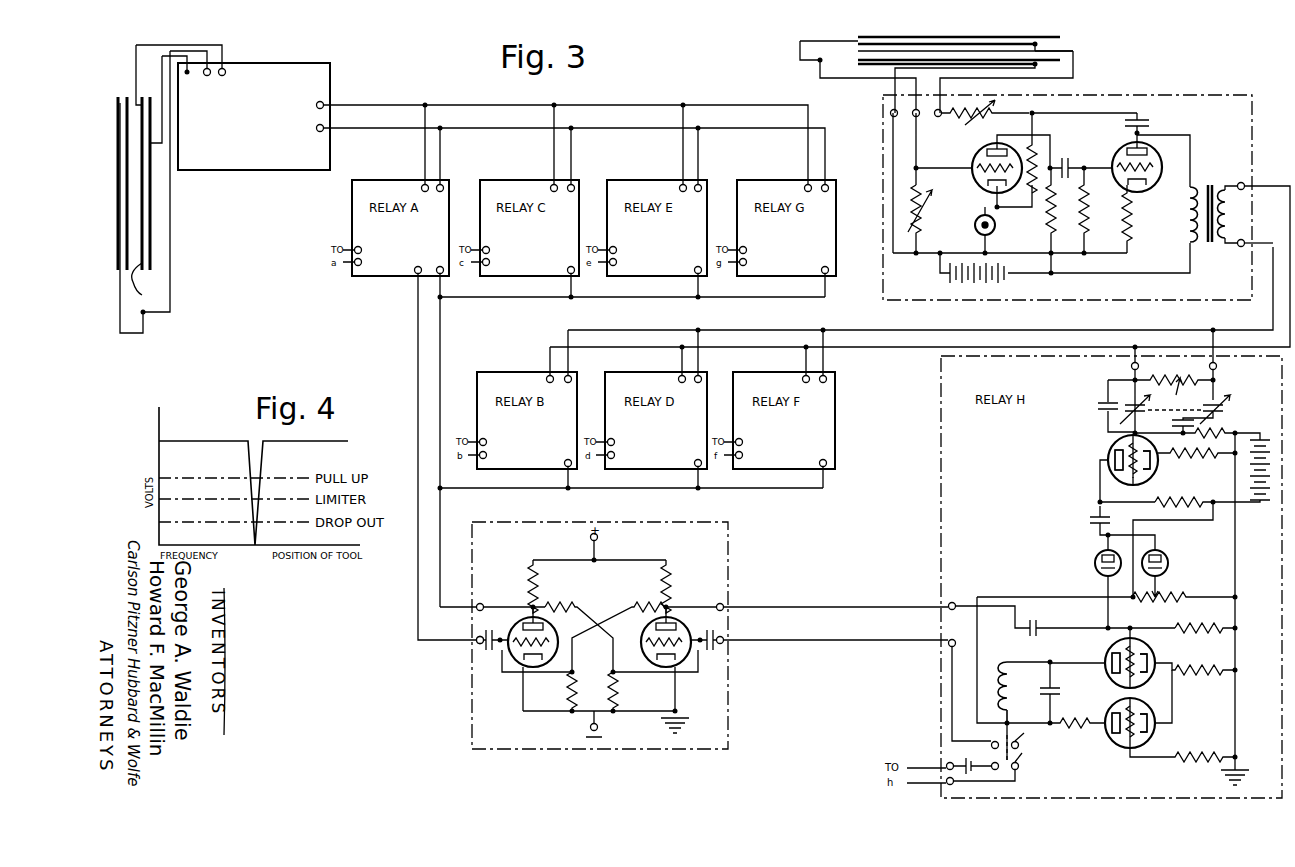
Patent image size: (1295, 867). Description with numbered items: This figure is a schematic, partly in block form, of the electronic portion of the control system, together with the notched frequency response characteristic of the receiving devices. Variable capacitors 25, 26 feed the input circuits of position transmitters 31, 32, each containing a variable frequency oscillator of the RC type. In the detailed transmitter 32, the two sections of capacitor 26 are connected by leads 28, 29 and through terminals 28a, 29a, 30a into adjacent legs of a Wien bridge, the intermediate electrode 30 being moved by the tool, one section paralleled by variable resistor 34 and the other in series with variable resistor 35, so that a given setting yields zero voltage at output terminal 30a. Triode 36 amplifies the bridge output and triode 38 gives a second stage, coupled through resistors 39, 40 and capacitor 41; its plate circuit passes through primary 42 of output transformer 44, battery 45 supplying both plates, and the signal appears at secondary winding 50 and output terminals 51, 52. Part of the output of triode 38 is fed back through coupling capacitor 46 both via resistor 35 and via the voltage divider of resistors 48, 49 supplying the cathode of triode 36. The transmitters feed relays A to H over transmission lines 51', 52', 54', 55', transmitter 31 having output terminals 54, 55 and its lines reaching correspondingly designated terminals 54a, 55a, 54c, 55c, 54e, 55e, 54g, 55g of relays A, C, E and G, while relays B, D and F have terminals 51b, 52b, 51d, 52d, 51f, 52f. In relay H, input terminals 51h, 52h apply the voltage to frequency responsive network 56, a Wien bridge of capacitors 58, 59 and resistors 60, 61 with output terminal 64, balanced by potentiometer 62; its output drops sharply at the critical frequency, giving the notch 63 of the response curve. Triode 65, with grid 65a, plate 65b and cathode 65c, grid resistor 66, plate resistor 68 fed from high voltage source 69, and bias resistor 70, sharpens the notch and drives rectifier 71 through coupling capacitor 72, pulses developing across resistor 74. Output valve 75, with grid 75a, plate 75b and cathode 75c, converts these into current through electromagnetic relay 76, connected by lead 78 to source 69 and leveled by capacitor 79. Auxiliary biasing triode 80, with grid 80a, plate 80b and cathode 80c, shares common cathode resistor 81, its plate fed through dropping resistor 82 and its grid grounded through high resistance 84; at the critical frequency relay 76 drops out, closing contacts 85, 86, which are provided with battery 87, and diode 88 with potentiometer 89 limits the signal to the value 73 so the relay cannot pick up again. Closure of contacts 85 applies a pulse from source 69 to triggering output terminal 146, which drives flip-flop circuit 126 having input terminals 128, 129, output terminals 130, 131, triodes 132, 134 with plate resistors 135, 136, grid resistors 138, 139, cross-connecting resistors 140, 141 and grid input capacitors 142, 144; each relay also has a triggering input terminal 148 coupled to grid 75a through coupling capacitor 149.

In FIG. 3, the variable capacitor 25 is at (178, 262).
In FIG. 3, the variable capacitor 26 is at (1097, 49).
In FIG. 3, the pickup coil 28 is at (150, 240).
In FIG. 3, the exciting coil 29 is at (136, 288).
In FIG. 3, the intermediate electrode 30 is at (143, 333).
In FIG. 3, the position transmitter 31 is at (312, 60).
In FIG. 3, the terminal 28a is at (187, 72).
In FIG. 3, the terminal 29a is at (226, 73).
In FIG. 3, the bridge output terminal 30a is at (208, 75).
In FIG. 3, the position transmitter 32 is at (1219, 91).
In FIG. 3, the variable resistor 34 is at (920, 222).
In FIG. 3, the second variable resistor 35 is at (975, 118).
In FIG. 3, the triode 36 is at (974, 156).
In FIG. 3, the triode 38 is at (1123, 145).
In FIG. 3, the resistor 39 is at (1050, 214).
In FIG. 3, the resistor 40 is at (1084, 214).
In FIG. 3, the capacitor 41 is at (1064, 164).
In FIG. 3, the primary 42 is at (1190, 231).
In FIG. 3, the output transformer 44 is at (1216, 182).
In FIG. 3, the battery 45 is at (1008, 280).
In FIG. 3, the coupling capacitor 46 is at (1146, 121).
In FIG. 3, the resistor 48 is at (1032, 145).
In FIG. 3, the resistor 49 is at (975, 231).
In FIG. 3, the secondary winding 50 is at (1242, 211).
In FIG. 3, the output terminal 51 is at (1256, 255).
In FIG. 3, the output terminal 52 is at (1260, 179).
In FIG. 3, the transmission line 51' is at (920, 313).
In FIG. 3, the transmission line 52' is at (920, 282).
In FIG. 3, the output terminal 54 is at (302, 106).
In FIG. 3, the output terminal 55 is at (302, 129).
In FIG. 3, the transmission line 54' is at (566, 134).
In FIG. 3, the transmission line 55' is at (574, 157).
In FIG. 3, the relay terminal 54a is at (417, 188).
In FIG. 3, the relay terminal 55a is at (444, 188).
In FIG. 3, the relay terminal 54c is at (547, 188).
In FIG. 3, the relay terminal 55c is at (574, 188).
In FIG. 3, the relay terminal 54e is at (675, 188).
In FIG. 3, the relay terminal 55e is at (701, 188).
In FIG. 3, the relay terminal 54g is at (806, 186).
In FIG. 3, the relay terminal 55g is at (828, 188).
In FIG. 3, the relay terminal 51b is at (570, 378).
In FIG. 3, the relay terminal 52b is at (544, 378).
In FIG. 3, the relay terminal 51d is at (700, 378).
In FIG. 3, the relay terminal 52d is at (680, 378).
In FIG. 3, the relay terminal 51f is at (826, 378).
In FIG. 3, the relay terminal 52f is at (806, 378).
In FIG. 3, the input terminal 51h is at (1218, 368).
In FIG. 3, the input terminal 52h is at (1131, 368).
In FIG. 3, the frequency responsive network 56 is at (1097, 390).
In FIG. 3, the capacitor 58 is at (1096, 410).
In FIG. 3, the capacitor 59 is at (1172, 424).
In FIG. 3, the resistor 60 is at (1114, 410).
In FIG. 3, the resistor 61 is at (1232, 405).
In FIG. 3, the potentiometer 62 is at (1180, 380).
In FIG. 4, the notch 63 is at (224, 441).
In FIG. 3, the output terminal 64 is at (1116, 438).
In FIG. 3, the triode 65 is at (1116, 460).
In FIG. 3, the grid 65a is at (1120, 474).
In FIG. 3, the plate 65b is at (1128, 472).
In FIG. 3, the cathode 65c is at (1158, 469).
In FIG. 3, the grid resistor 66 is at (1238, 435).
In FIG. 3, the plate resistor 68 is at (1197, 503).
In FIG. 3, the high voltage source 69 is at (1266, 494).
In FIG. 3, the resistor 70 is at (1192, 460).
In FIG. 3, the rectifier 71 is at (1094, 566).
In FIG. 3, the coupling capacitor 72 is at (1095, 537).
In FIG. 4, the limiting value 73 is at (211, 498).
In FIG. 3, the resistor 74 is at (1182, 628).
In FIG. 3, the output valve 75 is at (1112, 652).
In FIG. 3, the grid 75a is at (1138, 658).
In FIG. 3, the plate 75b is at (1110, 668).
In FIG. 3, the cathode 75c is at (1150, 667).
In FIG. 3, the electromagnetic relay 76 is at (1000, 666).
In FIG. 3, the lead 78 is at (997, 602).
In FIG. 3, the capacitor 79 is at (1046, 692).
In FIG. 3, the auxiliary biasing triode 80 is at (1112, 714).
In FIG. 3, the grid 80a is at (1130, 734).
In FIG. 3, the plate 80b is at (1110, 732).
In FIG. 3, the cathode 80c is at (1150, 748).
In FIG. 3, the common cathode resistor 81 is at (1189, 678).
In FIG. 3, the plate dropping resistor 82 is at (1070, 716).
In FIG. 3, the high resistance 84 is at (1208, 766).
In FIG. 3, the contacts 85 is at (1021, 750).
In FIG. 3, the contacts 86 is at (1022, 772).
In FIG. 3, the battery 87 is at (955, 758).
In FIG. 3, the diode 88 is at (1162, 556).
In FIG. 3, the potentiometer 89 is at (1170, 594).
In FIG. 3, the flip-flop circuit 126 is at (467, 730).
In FIG. 3, the input terminal 128 is at (724, 644).
In FIG. 3, the input terminal 129 is at (476, 646).
In FIG. 3, the output terminal 130 is at (723, 606).
In FIG. 3, the output terminal 131 is at (481, 606).
In FIG. 3, the triode 132 is at (525, 667).
In FIG. 3, the triode 134 is at (676, 665).
In FIG. 3, the series resistor 135 is at (530, 596).
In FIG. 3, the series resistor 136 is at (668, 586).
In FIG. 3, the grid resistor 138 is at (570, 684).
In FIG. 3, the grid resistor 139 is at (614, 684).
In FIG. 3, the resistor 140 is at (558, 604).
In FIG. 3, the resistor 141 is at (652, 600).
In FIG. 3, the grid input capacitor 142 is at (484, 656).
In FIG. 3, the grid input capacitor 144 is at (716, 658).
In FIG. 3, the triggering output terminal 146 is at (430, 250).
In FIG. 3, the triggering input terminal 148 is at (438, 263).
In FIG. 3, the coupling capacitor 149 is at (1034, 628).